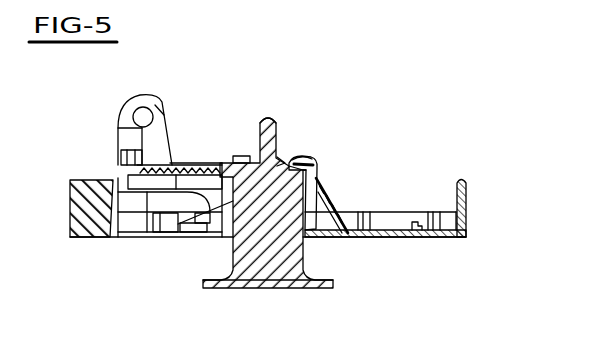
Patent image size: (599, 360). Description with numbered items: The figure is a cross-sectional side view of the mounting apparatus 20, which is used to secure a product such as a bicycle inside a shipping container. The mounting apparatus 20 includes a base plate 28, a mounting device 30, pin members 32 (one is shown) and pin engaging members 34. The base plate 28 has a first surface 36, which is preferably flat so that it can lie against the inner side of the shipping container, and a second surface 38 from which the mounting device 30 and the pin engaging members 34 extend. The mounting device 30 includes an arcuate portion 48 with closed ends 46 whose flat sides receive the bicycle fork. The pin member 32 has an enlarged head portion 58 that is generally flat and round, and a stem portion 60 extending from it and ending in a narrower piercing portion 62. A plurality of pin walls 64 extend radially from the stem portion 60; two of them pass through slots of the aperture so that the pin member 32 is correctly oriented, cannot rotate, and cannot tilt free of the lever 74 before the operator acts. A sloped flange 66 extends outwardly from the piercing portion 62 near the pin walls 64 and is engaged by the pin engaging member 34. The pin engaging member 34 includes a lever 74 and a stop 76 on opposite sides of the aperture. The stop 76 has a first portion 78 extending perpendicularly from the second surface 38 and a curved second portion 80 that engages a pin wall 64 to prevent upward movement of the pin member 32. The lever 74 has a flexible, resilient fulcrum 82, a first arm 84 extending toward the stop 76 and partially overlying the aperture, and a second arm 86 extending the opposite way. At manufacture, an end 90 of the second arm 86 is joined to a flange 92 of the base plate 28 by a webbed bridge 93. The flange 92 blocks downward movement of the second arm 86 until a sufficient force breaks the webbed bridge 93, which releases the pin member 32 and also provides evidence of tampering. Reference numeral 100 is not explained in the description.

The mounting apparatus 20 is at (360, 83).
The base plate 28 is at (422, 238).
The mounting device 30 is at (153, 104).
The pin member 32 is at (245, 273).
The pin engaging member 34 is at (215, 165).
The first surface 36 is at (373, 238).
The second surface 38 is at (397, 230).
The closed ends 46 is at (168, 103).
The arcuate portion 48 is at (148, 93).
The enlarged head portion 58 is at (303, 289).
The stem portion 60 is at (287, 160).
The piercing portion 62 is at (277, 157).
The pin wall 64 is at (242, 240).
The sloped flange 66 is at (298, 158).
The lever 74 is at (197, 165).
The stop 76 is at (318, 184).
The first portion 78 is at (320, 197).
The second portion 80 is at (312, 168).
The fulcrum 82 is at (160, 216).
The first arm 84 is at (232, 163).
The second arm 86 is at (207, 165).
The end 90 is at (123, 182).
The flange 92 is at (124, 190).
The webbed bridge 93 is at (120, 237).
The retainer 100 is at (178, 234).